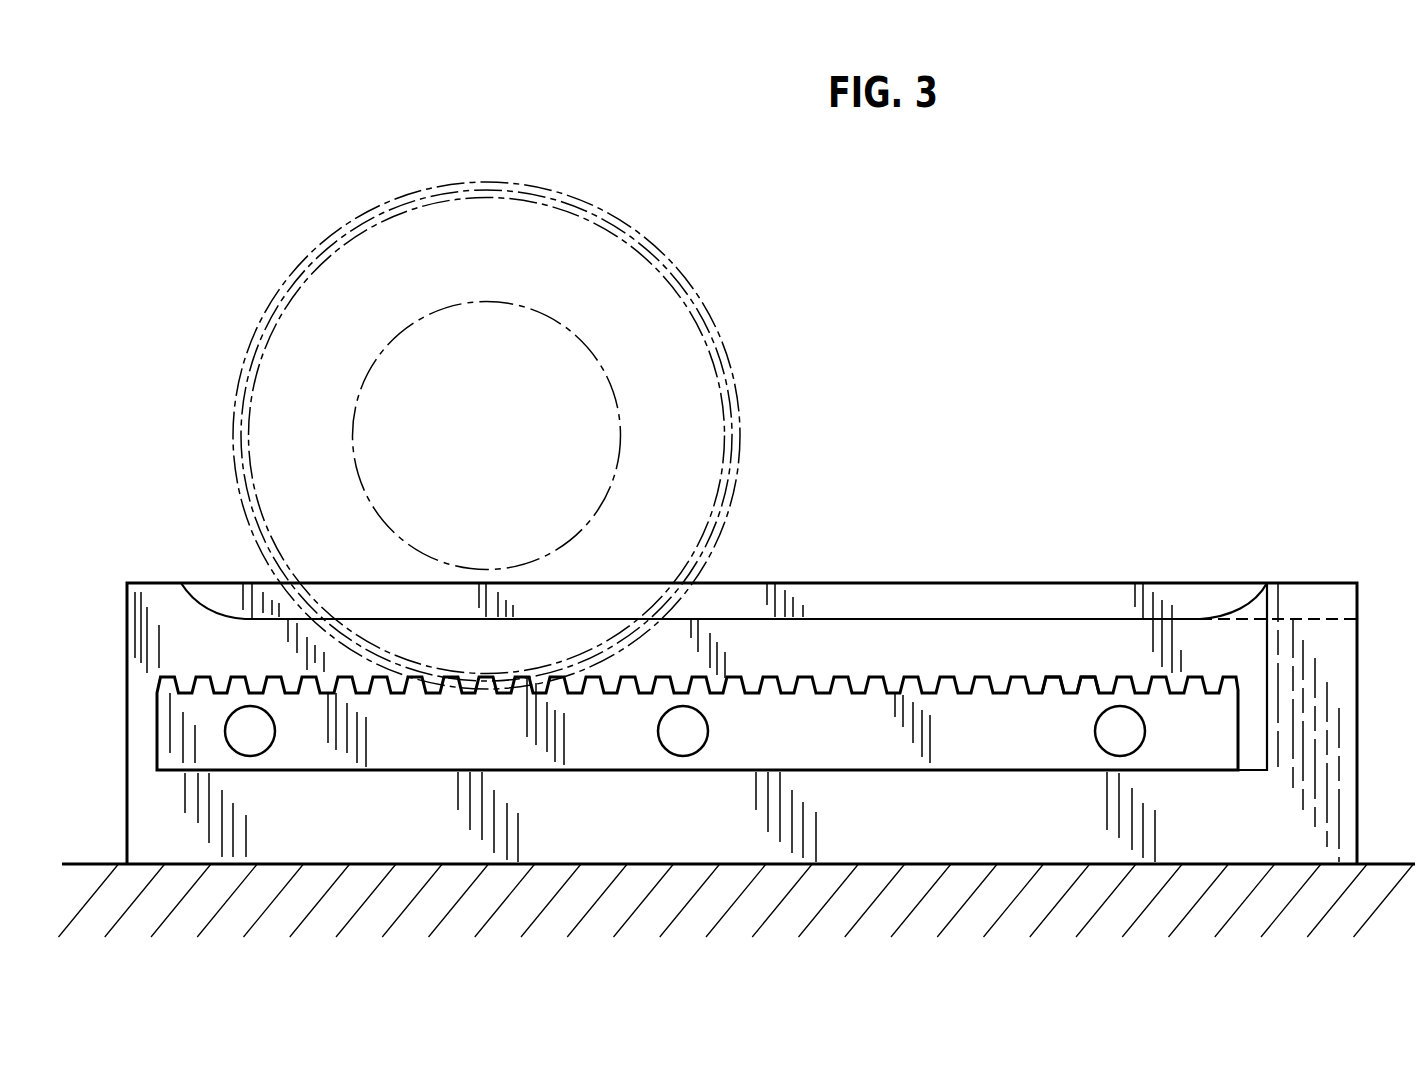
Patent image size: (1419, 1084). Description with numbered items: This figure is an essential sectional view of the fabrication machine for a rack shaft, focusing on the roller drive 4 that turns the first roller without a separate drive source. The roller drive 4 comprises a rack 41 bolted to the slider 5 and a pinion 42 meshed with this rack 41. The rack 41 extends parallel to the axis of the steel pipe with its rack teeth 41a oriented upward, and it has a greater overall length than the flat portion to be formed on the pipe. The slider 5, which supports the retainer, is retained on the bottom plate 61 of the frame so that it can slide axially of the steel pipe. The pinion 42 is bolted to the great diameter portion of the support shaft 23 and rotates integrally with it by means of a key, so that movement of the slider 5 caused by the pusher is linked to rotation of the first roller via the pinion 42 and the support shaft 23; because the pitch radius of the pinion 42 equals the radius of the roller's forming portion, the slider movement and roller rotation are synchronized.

The support shaft 23 is at (523, 370).
The pinion 42 is at (740, 420).
The roller drive 4 is at (697, 660).
The rack 41 is at (1018, 757).
The rack teeth 41a is at (1052, 685).
The slider 5 is at (1293, 581).
The bottom plate 61 is at (1352, 897).